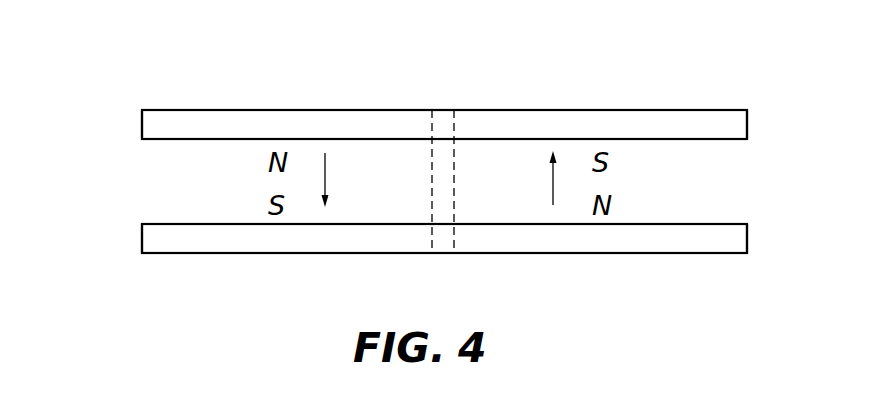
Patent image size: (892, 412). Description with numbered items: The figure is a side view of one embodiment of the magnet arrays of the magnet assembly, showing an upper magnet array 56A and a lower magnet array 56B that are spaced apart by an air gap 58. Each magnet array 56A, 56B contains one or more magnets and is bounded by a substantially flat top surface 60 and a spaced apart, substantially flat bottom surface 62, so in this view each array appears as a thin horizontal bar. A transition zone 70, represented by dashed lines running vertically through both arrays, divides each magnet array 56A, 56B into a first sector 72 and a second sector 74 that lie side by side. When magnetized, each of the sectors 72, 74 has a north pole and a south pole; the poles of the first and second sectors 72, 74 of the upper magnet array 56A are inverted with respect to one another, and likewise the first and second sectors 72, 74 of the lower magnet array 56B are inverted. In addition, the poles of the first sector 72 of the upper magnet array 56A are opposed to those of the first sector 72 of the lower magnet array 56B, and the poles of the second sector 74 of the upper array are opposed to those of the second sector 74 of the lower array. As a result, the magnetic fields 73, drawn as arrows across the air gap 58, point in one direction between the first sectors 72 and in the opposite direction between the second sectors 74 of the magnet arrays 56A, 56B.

The upper magnet array 56A is at (586, 103).
The lower magnet array 56B is at (610, 264).
The air gap 58 is at (171, 170).
The top surface 60 is at (302, 108).
The bottom surface 62 is at (340, 140).
The transition zone 70 is at (443, 123).
The first sector 72 is at (263, 125).
The magnetic fields 73 is at (325, 173).
The second sector 74 is at (652, 125).